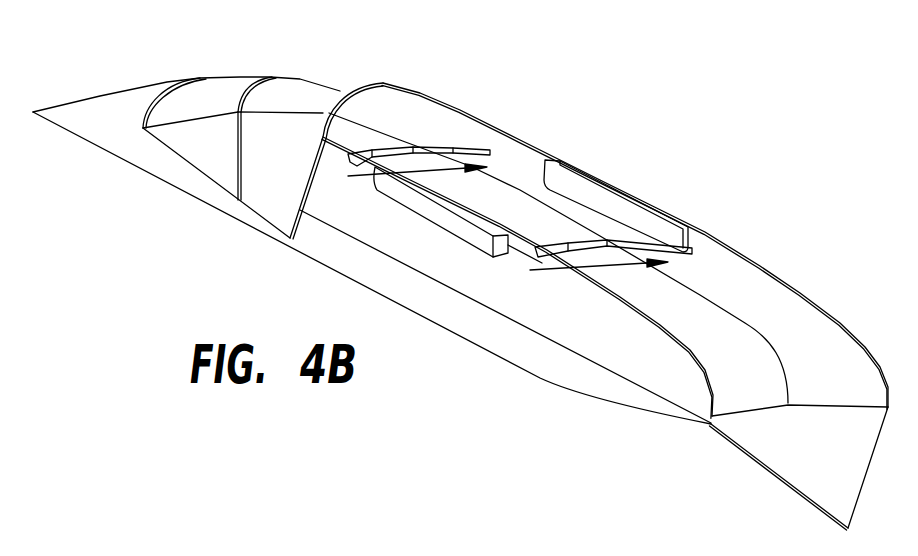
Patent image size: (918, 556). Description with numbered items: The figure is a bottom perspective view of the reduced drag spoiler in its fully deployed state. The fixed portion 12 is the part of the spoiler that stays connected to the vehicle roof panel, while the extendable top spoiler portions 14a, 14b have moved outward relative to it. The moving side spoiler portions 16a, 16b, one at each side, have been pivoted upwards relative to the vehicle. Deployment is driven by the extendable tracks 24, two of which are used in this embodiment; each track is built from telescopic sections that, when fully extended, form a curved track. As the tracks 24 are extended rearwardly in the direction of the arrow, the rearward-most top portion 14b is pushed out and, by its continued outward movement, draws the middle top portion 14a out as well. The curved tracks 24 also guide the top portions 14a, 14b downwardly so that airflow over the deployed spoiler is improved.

The fixed portion 12 is at (118, 100).
The second extendable top spoiler portion 14a is at (222, 92).
The first extendable top spoiler portion 14b is at (316, 97).
The moving side spoiler portion 16a is at (216, 152).
The moving side spoiler portion 16b is at (816, 453).
The extendable track 24 is at (443, 150).